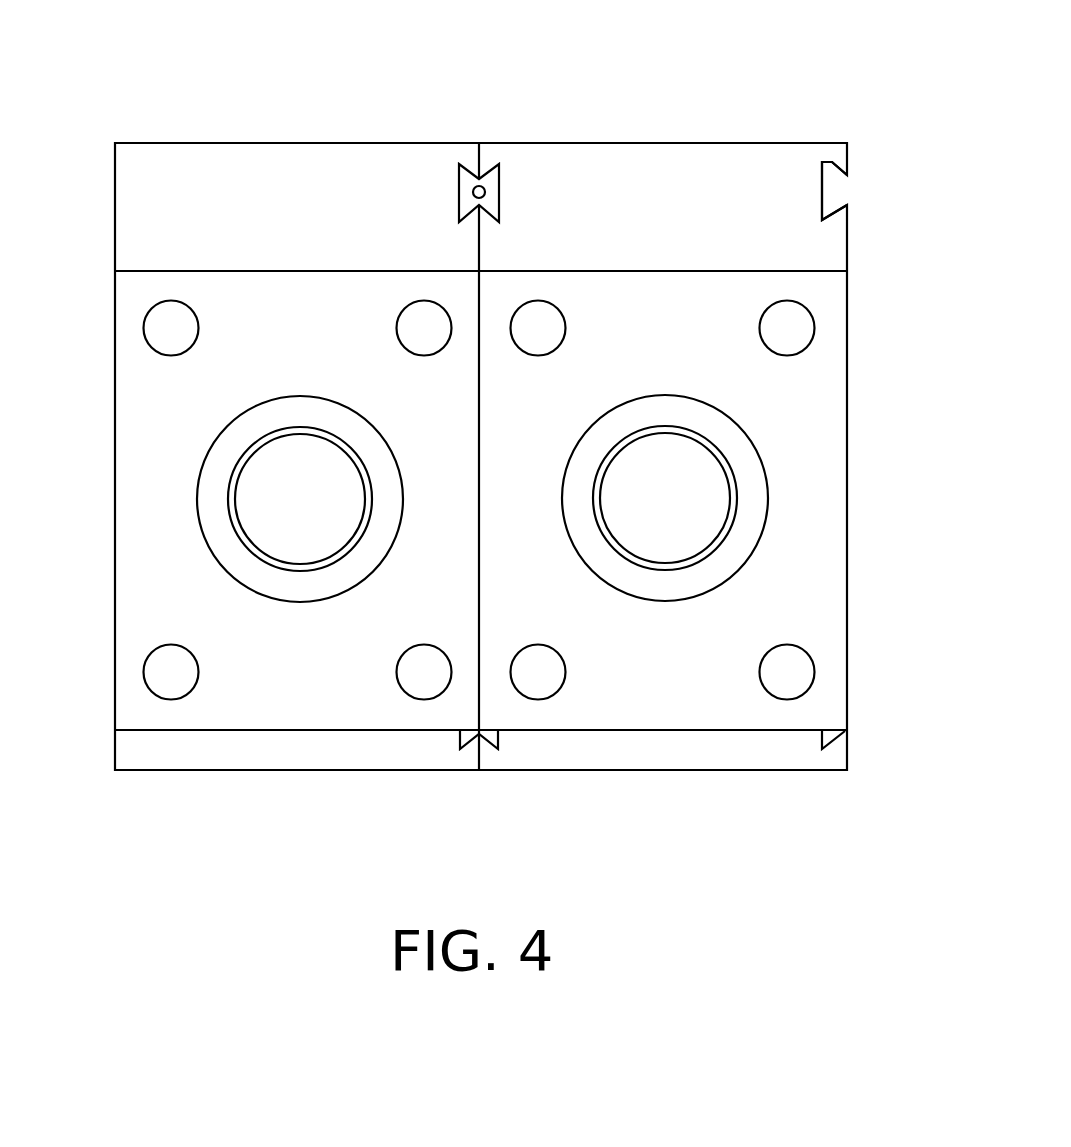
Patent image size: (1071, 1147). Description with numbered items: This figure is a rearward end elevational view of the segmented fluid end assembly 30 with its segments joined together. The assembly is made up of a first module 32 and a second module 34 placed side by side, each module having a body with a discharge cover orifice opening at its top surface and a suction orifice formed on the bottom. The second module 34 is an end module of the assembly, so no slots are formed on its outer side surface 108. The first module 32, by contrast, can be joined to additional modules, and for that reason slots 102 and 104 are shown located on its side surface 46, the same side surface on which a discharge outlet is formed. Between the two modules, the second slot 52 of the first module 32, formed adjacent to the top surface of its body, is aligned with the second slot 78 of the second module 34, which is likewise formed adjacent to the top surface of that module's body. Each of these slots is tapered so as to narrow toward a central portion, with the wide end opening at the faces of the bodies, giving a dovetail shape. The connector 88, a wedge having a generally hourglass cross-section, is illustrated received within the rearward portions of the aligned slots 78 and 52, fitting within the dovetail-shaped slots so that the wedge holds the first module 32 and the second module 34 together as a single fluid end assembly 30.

The segmented fluid end assembly 30 is at (776, 80).
The first module 32 is at (832, 465).
The second module 34 is at (115, 250).
The side surface 46 is at (847, 362).
The second slot 52 is at (500, 179).
The second slot 78 is at (458, 195).
The connector 88 is at (492, 198).
The slot 102 is at (835, 192).
The slot 104 is at (845, 731).
The side surface 108 is at (115, 642).